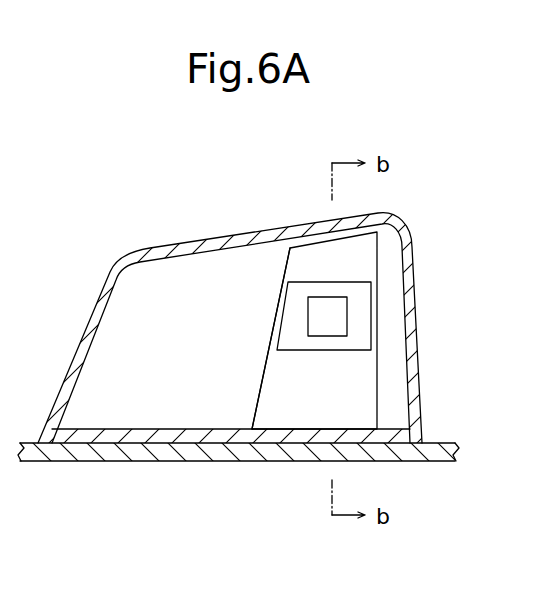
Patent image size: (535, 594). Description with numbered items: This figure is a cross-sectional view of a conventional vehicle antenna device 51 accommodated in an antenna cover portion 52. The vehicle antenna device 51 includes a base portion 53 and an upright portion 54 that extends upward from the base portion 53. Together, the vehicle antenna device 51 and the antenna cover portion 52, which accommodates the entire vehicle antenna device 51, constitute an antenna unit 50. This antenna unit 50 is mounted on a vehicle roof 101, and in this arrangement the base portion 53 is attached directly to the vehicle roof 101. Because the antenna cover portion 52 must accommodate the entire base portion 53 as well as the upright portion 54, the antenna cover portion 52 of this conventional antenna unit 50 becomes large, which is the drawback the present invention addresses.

The antenna unit 50 is at (267, 314).
The vehicle antenna device 51 is at (380, 280).
The antenna cover portion 52 is at (371, 218).
The base portion 53 is at (165, 438).
The upright portion 54 is at (267, 365).
The vehicle roof 101 is at (258, 456).